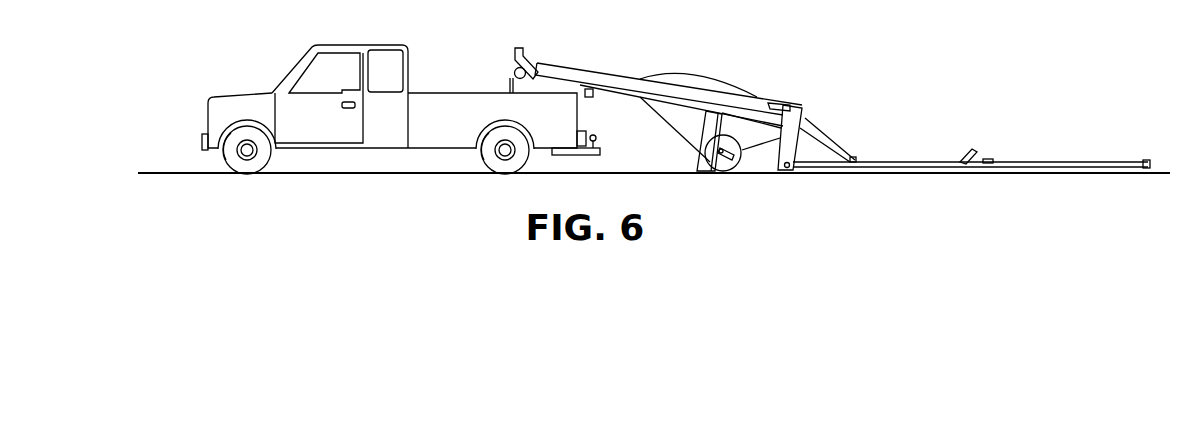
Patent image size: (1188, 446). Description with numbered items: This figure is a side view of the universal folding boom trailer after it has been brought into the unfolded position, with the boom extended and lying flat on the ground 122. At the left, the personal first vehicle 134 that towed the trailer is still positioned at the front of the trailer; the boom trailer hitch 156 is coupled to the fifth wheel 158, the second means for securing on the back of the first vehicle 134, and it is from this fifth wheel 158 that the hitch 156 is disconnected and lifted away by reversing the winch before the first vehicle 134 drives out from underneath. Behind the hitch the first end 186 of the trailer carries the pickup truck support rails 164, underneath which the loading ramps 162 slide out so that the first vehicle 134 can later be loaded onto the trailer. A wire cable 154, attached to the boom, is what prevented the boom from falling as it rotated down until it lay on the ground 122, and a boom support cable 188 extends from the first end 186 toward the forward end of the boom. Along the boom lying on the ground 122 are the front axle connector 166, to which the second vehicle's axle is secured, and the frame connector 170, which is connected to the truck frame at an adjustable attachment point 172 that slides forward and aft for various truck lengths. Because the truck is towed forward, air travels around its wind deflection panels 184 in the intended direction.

The ground 122 is at (369, 210).
The first vehicle 134 is at (233, 95).
The wire cable 154 is at (827, 141).
The boom trailer hitch 156 is at (530, 58).
The fifth wheel 158 is at (512, 70).
The loading ramps 162 is at (807, 113).
The pickup truck support rails 164 is at (769, 101).
The front axle connector 166 is at (978, 154).
The frame connector 170 is at (1146, 161).
The attachment point 172 is at (1145, 172).
The wind deflection panels 184 is at (719, 171).
The first end 186 is at (595, 66).
The boom support cable 188 is at (657, 113).